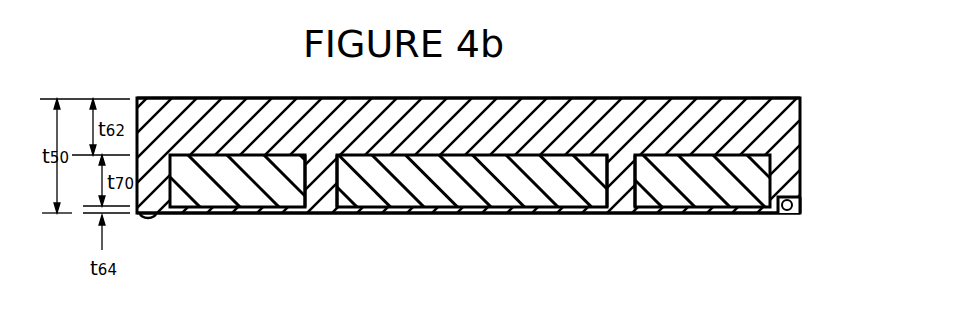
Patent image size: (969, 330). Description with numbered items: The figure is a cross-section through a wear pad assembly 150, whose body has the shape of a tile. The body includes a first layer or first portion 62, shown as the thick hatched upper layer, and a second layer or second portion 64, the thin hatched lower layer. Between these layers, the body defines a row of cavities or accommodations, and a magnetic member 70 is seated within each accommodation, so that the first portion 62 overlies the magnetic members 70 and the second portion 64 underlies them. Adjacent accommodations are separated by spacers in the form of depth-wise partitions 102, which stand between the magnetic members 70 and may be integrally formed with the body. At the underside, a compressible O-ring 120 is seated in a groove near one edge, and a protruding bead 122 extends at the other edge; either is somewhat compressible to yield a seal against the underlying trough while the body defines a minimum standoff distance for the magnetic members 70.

The first layer or first portion 62 is at (262, 118).
The pad assembly 150 is at (690, 100).
The magnetic member 70 is at (212, 192).
The depth-wise partition 102 is at (322, 196).
The second layer or second portion 64 is at (427, 205).
The compressible O-ring 120 is at (787, 211).
The protruding bead 122 is at (149, 218).